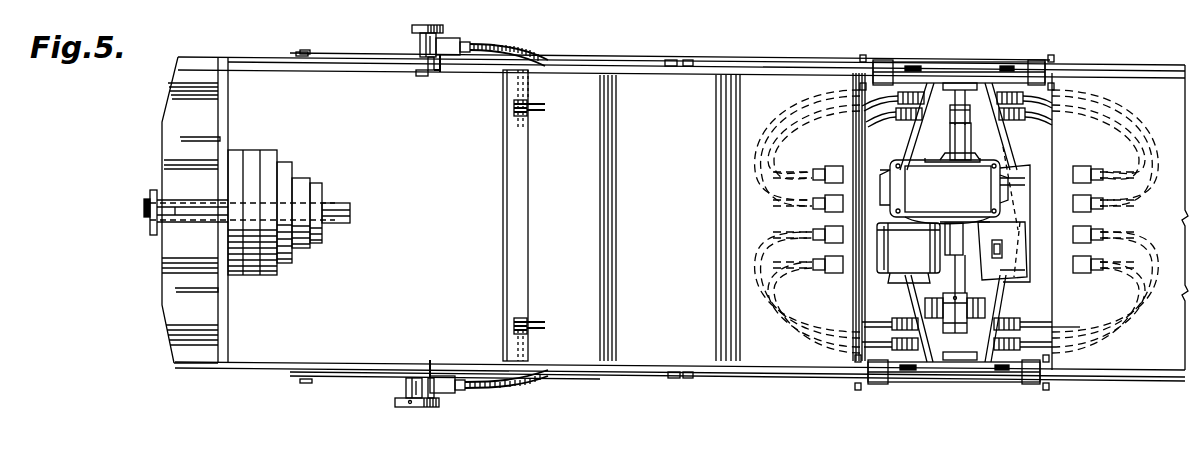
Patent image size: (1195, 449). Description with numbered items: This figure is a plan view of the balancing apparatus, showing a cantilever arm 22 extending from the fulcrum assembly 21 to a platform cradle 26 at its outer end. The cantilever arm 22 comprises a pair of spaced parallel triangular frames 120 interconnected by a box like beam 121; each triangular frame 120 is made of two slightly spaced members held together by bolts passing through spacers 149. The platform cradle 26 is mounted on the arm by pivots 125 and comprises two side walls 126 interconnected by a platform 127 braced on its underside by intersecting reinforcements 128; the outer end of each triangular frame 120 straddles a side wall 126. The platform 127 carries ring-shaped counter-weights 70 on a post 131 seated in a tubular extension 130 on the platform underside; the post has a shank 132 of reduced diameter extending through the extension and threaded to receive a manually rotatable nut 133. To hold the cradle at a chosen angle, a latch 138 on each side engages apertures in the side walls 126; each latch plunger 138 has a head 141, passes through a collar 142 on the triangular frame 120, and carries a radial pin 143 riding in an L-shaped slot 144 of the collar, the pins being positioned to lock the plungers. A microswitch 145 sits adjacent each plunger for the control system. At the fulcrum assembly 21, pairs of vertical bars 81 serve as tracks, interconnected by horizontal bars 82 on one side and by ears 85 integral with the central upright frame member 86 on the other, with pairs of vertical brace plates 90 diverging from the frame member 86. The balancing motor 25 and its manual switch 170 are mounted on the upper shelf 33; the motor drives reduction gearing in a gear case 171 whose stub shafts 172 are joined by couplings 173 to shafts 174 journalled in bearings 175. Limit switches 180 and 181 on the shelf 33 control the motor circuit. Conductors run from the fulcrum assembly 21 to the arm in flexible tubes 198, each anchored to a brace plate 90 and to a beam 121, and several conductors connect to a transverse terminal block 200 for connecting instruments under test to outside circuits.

The fulcrum assembly 21 is at (927, 386).
The cantilever arm 22 is at (585, 380).
The balancing motor 25 is at (882, 258).
The platform cradle 26 is at (215, 376).
The upper shelf 33 is at (1016, 168).
The ring-shaped counter-weight 70 is at (298, 180).
The vertical bar 81 is at (883, 66).
The horizontal bar 82 is at (990, 62).
The ear 85 is at (893, 90).
The central upright frame member 86 is at (965, 62).
The vertical brace plate 90 is at (930, 84).
The triangular frame 120 is at (592, 57).
The box like beam 121 is at (662, 259).
The pivot 125 is at (304, 52).
The side wall 126 is at (264, 57).
The platform 127 is at (228, 312).
The intersecting reinforcement 128 is at (180, 292).
The tubular extension 130 is at (188, 206).
The post 131 is at (340, 205).
The shank 132 is at (150, 210).
The nut 133 is at (144, 213).
The latch 138 is at (420, 27).
The head 141 is at (445, 34).
The collar 142 is at (418, 72).
The radial pin 143 is at (440, 62).
The L-shaped slot 144 is at (418, 44).
The microswitch 145 is at (460, 45).
The spacer 149 is at (670, 60).
The manual switch 170 is at (1005, 277).
The gear case 171 is at (970, 193).
The stub shaft 172 is at (948, 160).
The coupling 173 is at (950, 148).
The shaft 174 is at (950, 116).
The bearing 175 is at (967, 90).
The limit switch 180 is at (935, 300).
The limit switch 181 is at (1085, 330).
The flexible tube 198 is at (690, 60).
The transverse terminal block 200 is at (527, 250).